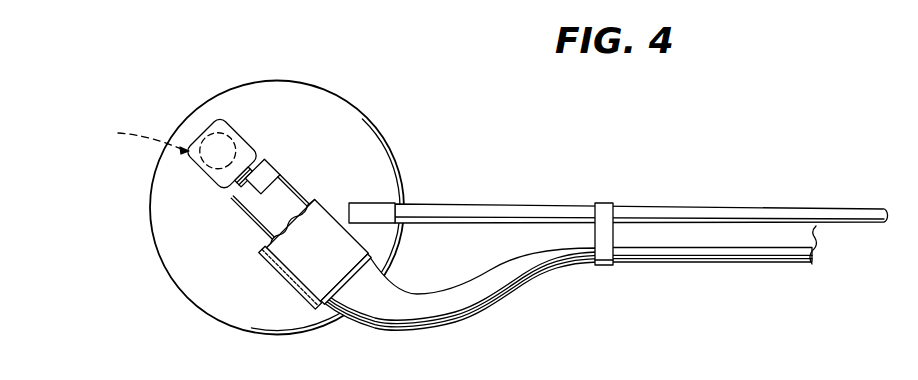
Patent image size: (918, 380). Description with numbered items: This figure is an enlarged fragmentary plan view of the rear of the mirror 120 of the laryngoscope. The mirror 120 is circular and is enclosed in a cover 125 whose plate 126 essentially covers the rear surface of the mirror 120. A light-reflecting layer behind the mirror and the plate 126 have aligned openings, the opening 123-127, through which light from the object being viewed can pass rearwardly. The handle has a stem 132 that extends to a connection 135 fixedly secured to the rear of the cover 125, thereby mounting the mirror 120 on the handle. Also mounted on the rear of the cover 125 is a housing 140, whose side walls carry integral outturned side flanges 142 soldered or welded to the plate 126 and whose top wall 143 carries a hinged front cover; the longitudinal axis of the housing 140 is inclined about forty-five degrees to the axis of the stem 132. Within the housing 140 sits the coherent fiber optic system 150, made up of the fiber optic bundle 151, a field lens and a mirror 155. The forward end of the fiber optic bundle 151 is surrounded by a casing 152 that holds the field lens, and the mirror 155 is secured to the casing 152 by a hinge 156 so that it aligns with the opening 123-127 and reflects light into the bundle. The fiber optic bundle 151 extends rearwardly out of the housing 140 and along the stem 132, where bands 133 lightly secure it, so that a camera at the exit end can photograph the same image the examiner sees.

The mirror 120 is at (122, 217).
The aligned opening 123-127 is at (109, 135).
The cover 125 is at (358, 152).
The plate 126 is at (204, 268).
The stem 132 is at (745, 213).
The bands 133 is at (606, 265).
The connection 135 is at (383, 205).
The housing 140 is at (270, 275).
The outturned side flanges 142 is at (303, 287).
The top wall 143 is at (317, 233).
The coherent fiber optic system 150 is at (336, 303).
The fiber optic bundle 151 is at (467, 310).
The casing 152 is at (280, 202).
The mirror 155 is at (244, 137).
The hinge 156 is at (252, 175).